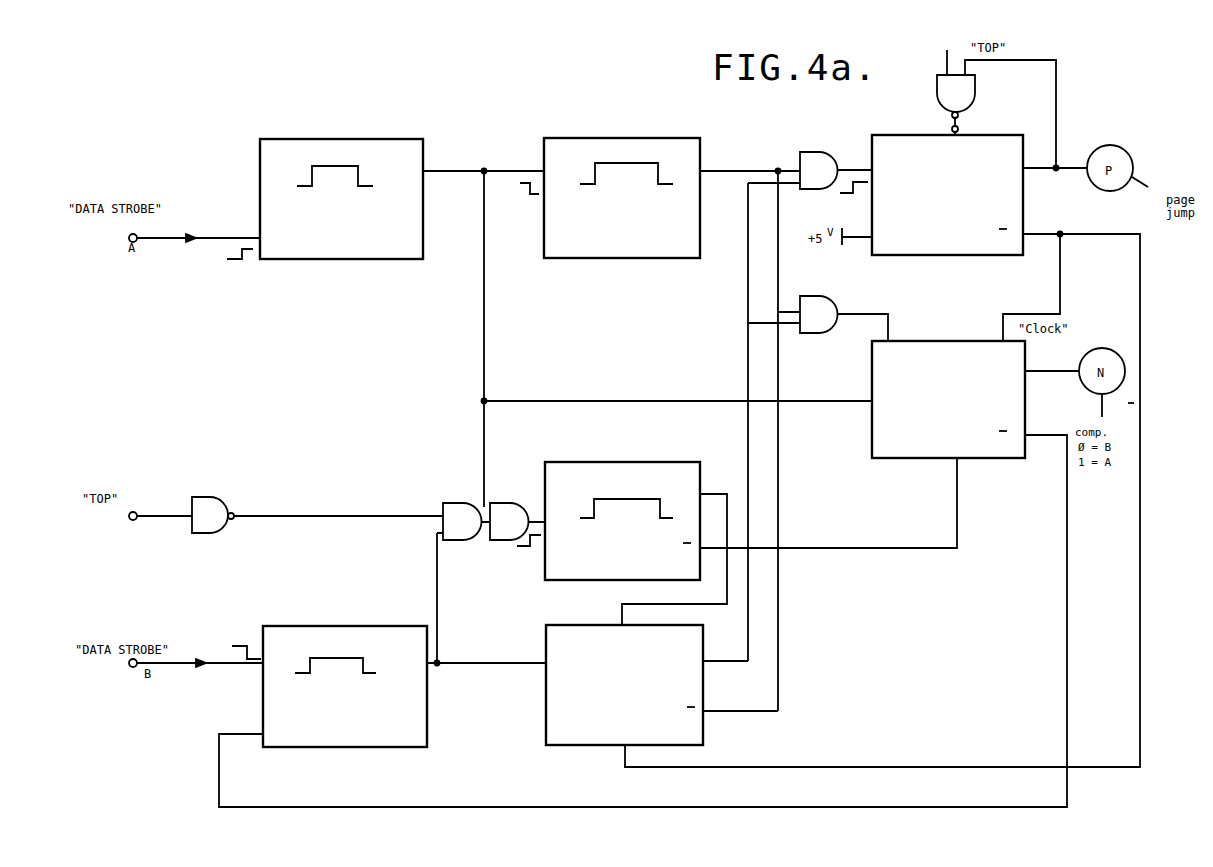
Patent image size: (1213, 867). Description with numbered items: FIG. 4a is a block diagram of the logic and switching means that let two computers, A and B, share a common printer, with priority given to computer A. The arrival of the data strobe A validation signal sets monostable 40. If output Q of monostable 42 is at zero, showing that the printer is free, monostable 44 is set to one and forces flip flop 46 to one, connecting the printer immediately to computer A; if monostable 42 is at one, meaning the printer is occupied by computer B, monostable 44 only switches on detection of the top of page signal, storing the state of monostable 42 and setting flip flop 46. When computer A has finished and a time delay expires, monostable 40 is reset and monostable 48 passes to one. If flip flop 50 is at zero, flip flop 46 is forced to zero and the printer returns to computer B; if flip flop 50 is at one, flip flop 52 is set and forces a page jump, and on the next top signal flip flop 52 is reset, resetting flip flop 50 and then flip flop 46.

The monostable 40 is at (360, 137).
The monostable 42 is at (395, 624).
The monostable 44 is at (672, 461).
The flip flop 46 is at (945, 338).
The monostable 48 is at (615, 137).
The flip flop 50 is at (565, 624).
The flip flop 52 is at (893, 133).